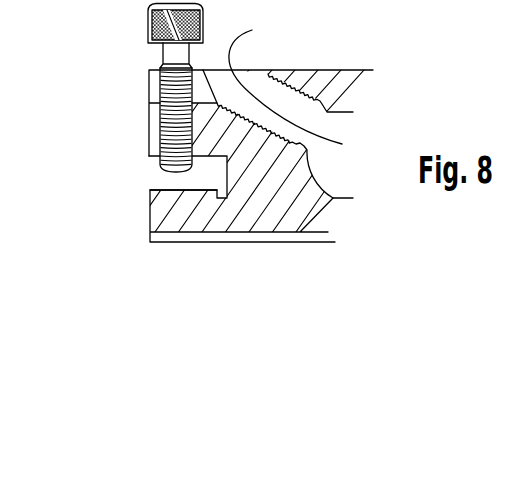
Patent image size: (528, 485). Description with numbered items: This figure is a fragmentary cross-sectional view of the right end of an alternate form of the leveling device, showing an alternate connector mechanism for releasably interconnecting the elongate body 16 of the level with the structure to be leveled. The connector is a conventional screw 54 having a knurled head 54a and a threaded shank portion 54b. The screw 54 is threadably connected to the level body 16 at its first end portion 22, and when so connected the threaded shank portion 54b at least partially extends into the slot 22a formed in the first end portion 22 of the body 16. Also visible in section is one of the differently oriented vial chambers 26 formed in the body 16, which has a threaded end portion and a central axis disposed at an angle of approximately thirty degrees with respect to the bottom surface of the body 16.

The elongate body 16 is at (327, 69).
The first end portion 22 is at (180, 251).
The slot 22a is at (165, 189).
The vial chamber 26 is at (285, 78).
The screw 54 is at (140, 88).
The knurled head 54a is at (149, 20).
The threaded shank portion 54b is at (161, 122).